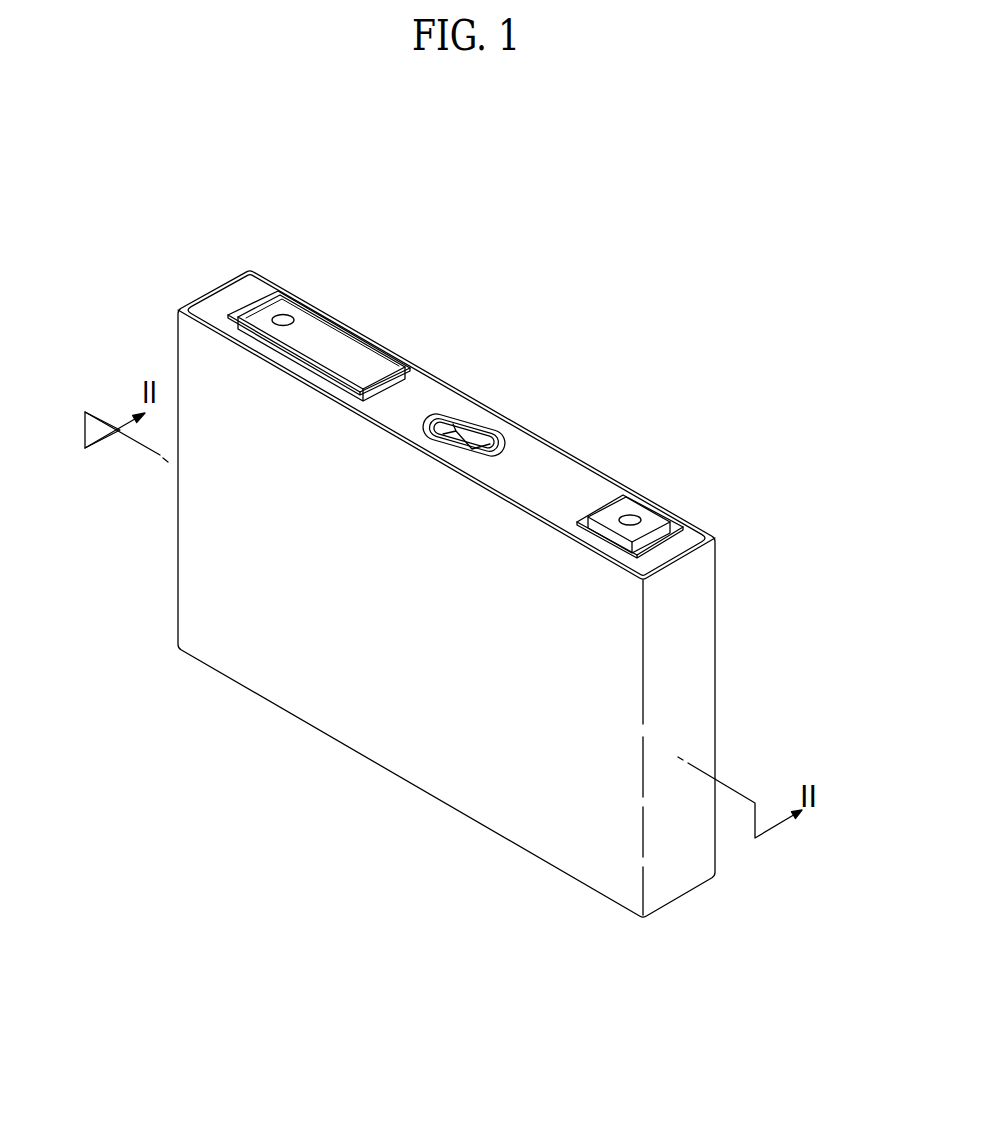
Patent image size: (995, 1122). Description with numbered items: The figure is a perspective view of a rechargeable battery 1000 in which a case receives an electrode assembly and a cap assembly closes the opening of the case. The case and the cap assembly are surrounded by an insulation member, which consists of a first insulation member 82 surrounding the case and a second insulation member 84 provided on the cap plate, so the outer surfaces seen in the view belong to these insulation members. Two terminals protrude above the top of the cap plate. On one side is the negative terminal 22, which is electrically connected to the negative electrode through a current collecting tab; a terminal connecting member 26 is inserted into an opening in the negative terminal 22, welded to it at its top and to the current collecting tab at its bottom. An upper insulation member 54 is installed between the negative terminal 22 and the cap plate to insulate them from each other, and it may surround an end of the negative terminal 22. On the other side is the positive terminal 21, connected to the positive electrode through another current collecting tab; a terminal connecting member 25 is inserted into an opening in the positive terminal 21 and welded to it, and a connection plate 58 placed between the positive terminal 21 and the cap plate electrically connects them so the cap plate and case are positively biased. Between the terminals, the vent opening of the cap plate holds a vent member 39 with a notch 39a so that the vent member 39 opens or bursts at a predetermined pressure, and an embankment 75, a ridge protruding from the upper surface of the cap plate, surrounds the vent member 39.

The rechargeable battery 1000 is at (581, 228).
The first insulation member 82 is at (387, 740).
The second insulation member 84 is at (556, 472).
The upper insulation member 54 is at (243, 315).
The negative terminal 22 is at (321, 316).
The terminal connecting member 26 is at (283, 314).
The embankment 75 is at (440, 413).
The vent member 39 is at (457, 416).
The notch 39a is at (471, 437).
The connection plate 58 is at (677, 535).
The positive terminal 21 is at (647, 492).
The terminal connecting member 25 is at (630, 514).